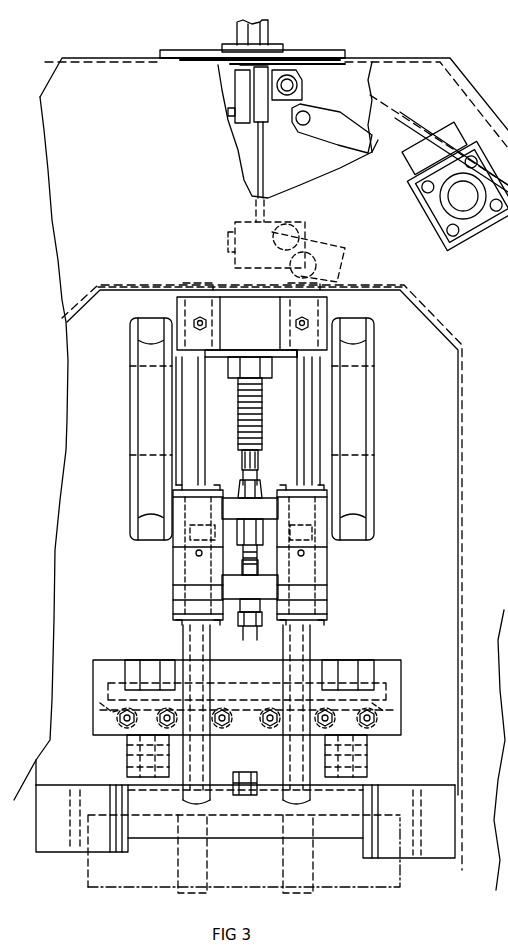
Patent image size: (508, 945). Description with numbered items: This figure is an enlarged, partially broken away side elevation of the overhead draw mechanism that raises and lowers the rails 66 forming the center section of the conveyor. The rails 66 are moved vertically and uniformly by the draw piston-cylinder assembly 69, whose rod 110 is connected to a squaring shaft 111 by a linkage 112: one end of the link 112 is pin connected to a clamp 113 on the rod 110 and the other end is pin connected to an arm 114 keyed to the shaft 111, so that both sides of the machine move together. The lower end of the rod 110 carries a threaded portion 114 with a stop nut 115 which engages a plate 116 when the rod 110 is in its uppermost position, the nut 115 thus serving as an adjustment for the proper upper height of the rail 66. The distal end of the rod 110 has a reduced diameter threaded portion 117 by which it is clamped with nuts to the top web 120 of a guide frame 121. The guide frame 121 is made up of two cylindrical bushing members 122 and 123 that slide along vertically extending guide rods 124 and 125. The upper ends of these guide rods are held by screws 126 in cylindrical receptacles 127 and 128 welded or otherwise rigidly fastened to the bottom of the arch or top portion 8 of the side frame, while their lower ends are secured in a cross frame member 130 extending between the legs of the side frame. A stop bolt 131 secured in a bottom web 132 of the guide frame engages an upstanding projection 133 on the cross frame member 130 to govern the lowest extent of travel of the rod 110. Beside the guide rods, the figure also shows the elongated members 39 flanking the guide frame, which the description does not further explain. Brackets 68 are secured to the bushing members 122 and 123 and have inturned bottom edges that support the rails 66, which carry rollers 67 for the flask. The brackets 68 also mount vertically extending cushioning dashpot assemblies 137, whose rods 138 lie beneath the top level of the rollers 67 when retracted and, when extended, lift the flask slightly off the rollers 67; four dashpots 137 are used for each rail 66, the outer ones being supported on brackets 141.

The arch or top portion 8 is at (443, 78).
The draw piston-cylinder assembly 69 is at (275, 30).
The clamp 113 is at (238, 93).
The rod 110 is at (264, 152).
The linkage 112 is at (306, 96).
The arm 114 is at (358, 145).
The squaring shaft 111 is at (470, 210).
The cylindrical receptacle 127 is at (175, 300).
The screw 126 is at (208, 315).
The cylindrical receptacle 128 is at (330, 270).
The plate 116 is at (298, 348).
The stop nut 115 is at (275, 372).
The guide rod 124 is at (196, 418).
The guide rod 125 is at (306, 404).
The guide rail 39 is at (130, 498).
The reduced diameter threaded portion 117 is at (240, 552).
The cylindrical bushing member 122 is at (175, 604).
The guide frame 121 is at (327, 558).
The cylindrical bushing member 123 is at (327, 598).
The top web 120 is at (278, 510).
The stop bolt 131 is at (242, 620).
The bottom web 132 is at (260, 620).
The bracket 68 is at (206, 648).
The rail 66 is at (400, 680).
The bracket 141 is at (150, 672).
The dashpot rod 138 is at (117, 718).
The roller 67 is at (100, 703).
The cushioning dashpot assembly 137 is at (127, 750).
The upstanding projection 133 is at (238, 770).
The cross frame member 130 is at (155, 838).